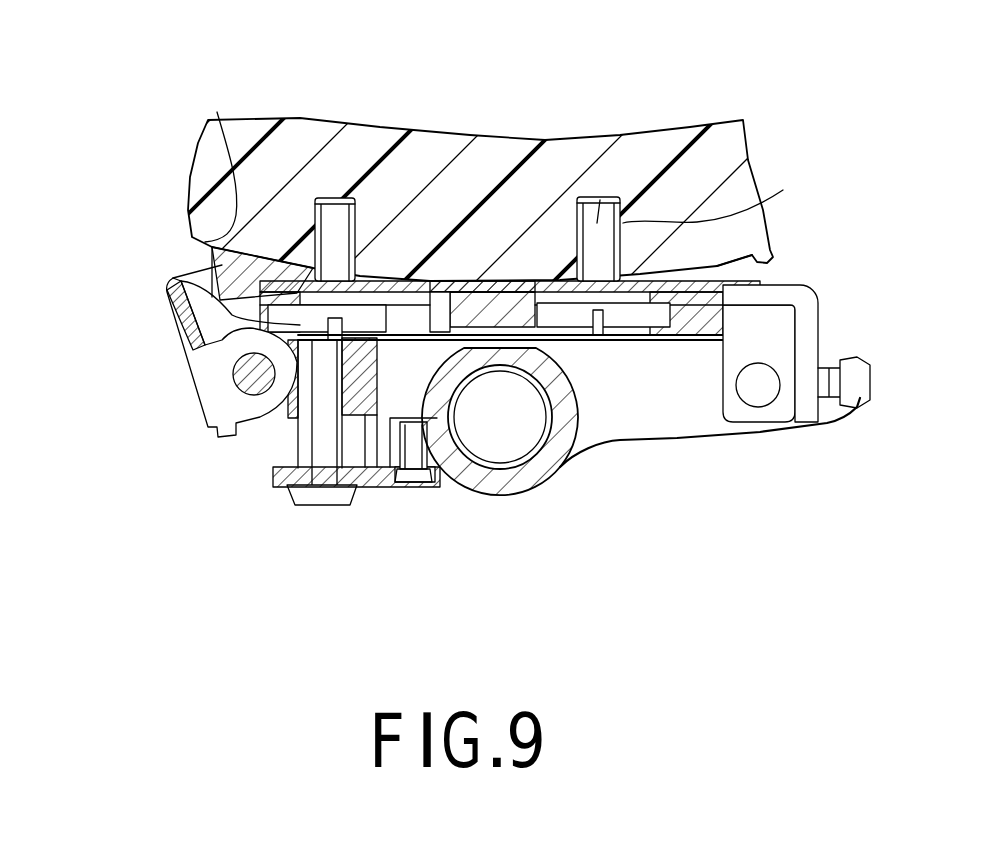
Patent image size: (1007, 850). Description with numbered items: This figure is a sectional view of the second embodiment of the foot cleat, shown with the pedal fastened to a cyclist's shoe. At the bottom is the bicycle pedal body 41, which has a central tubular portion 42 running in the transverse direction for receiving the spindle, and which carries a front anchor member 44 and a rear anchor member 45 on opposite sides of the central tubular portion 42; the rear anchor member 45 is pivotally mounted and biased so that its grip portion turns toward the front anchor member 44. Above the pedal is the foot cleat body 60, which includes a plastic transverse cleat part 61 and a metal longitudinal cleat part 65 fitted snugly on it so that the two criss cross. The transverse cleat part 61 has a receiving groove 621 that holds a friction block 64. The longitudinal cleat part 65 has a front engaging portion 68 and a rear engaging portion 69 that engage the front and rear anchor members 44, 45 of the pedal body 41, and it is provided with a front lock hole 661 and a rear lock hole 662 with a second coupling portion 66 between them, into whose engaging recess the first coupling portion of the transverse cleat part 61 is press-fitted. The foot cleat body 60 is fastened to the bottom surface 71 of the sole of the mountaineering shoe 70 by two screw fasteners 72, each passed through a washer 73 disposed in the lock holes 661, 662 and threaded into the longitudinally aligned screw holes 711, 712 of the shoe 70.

The pedal body 41 is at (688, 427).
The central tubular portion 42 is at (532, 473).
The front anchor member 44 is at (820, 343).
The rear anchor member 45 is at (167, 330).
The foot cleat body 60 is at (208, 254).
The transverse cleat part 61 is at (430, 281).
The friction block 64 is at (470, 292).
The longitudinal cleat part 65 is at (528, 281).
The second coupling portion 66 is at (236, 210).
The front engaging portion 68 is at (807, 342).
The rear engaging portion 69 is at (183, 286).
The mountaineering shoe 70 is at (623, 127).
The bottom surface 71 is at (780, 263).
The screw fastener 72 is at (597, 223).
The washer 73 is at (723, 280).
The receiving groove 621 is at (402, 281).
The front lock hole 661 is at (572, 275).
The rear lock hole 662 is at (232, 255).
The front screw hole 711 is at (719, 262).
The screw hole 712 is at (286, 260).